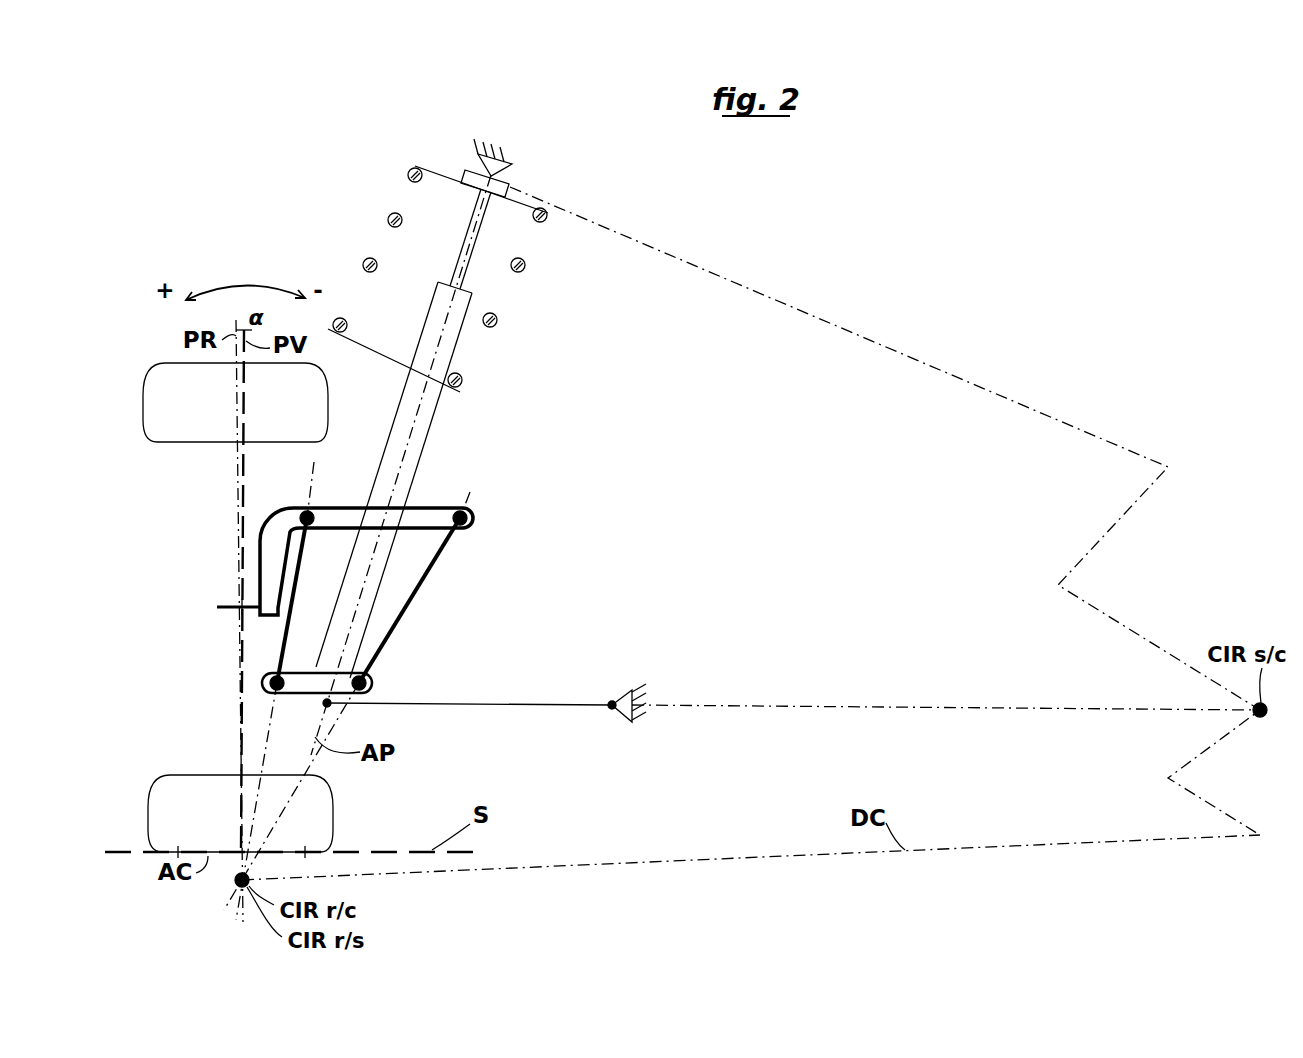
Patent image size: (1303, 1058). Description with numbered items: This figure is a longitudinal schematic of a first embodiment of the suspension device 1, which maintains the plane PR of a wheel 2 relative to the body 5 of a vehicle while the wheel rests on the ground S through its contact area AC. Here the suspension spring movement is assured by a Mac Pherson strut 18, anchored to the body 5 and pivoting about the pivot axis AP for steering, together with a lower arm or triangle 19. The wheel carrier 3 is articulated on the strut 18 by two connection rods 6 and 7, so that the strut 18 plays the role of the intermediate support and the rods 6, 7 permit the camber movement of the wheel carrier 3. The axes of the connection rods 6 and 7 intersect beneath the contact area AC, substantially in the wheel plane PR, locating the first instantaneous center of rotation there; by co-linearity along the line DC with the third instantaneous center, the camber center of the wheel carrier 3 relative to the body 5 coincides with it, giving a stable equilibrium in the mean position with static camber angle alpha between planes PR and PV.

The suspension device 1 is at (927, 275).
The wheel 2 is at (240, 728).
The wheel carrier 3 is at (450, 505).
The body 5 is at (508, 153).
The connection rod 6 is at (298, 574).
The connection rod 7 is at (407, 607).
The Mac Pherson strut 18 is at (418, 448).
The lower arm or triangle 19 is at (443, 703).